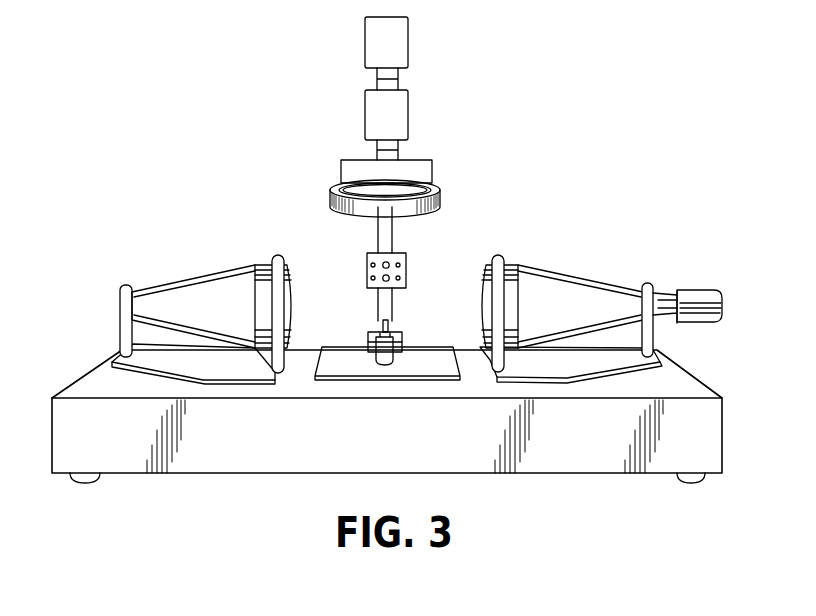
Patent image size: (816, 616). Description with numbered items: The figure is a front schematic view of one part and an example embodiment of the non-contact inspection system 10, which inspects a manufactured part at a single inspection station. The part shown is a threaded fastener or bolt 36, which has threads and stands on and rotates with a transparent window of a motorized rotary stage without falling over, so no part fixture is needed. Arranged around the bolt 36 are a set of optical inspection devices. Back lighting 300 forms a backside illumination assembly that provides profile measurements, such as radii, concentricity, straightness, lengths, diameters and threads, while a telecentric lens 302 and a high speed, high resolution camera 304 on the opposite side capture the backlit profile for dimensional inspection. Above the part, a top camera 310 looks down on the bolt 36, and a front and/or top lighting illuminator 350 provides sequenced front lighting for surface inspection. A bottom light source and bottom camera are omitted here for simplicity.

The non-contact inspection system 10 is at (543, 90).
The threaded fastener or bolt 36 is at (392, 322).
The back lighting 300 is at (207, 273).
The lens 302 is at (567, 272).
The high speed, high resolution camera 304 is at (699, 289).
The top camera 310 is at (410, 113).
The front and/or top lighting or illuminator 350 is at (442, 192).